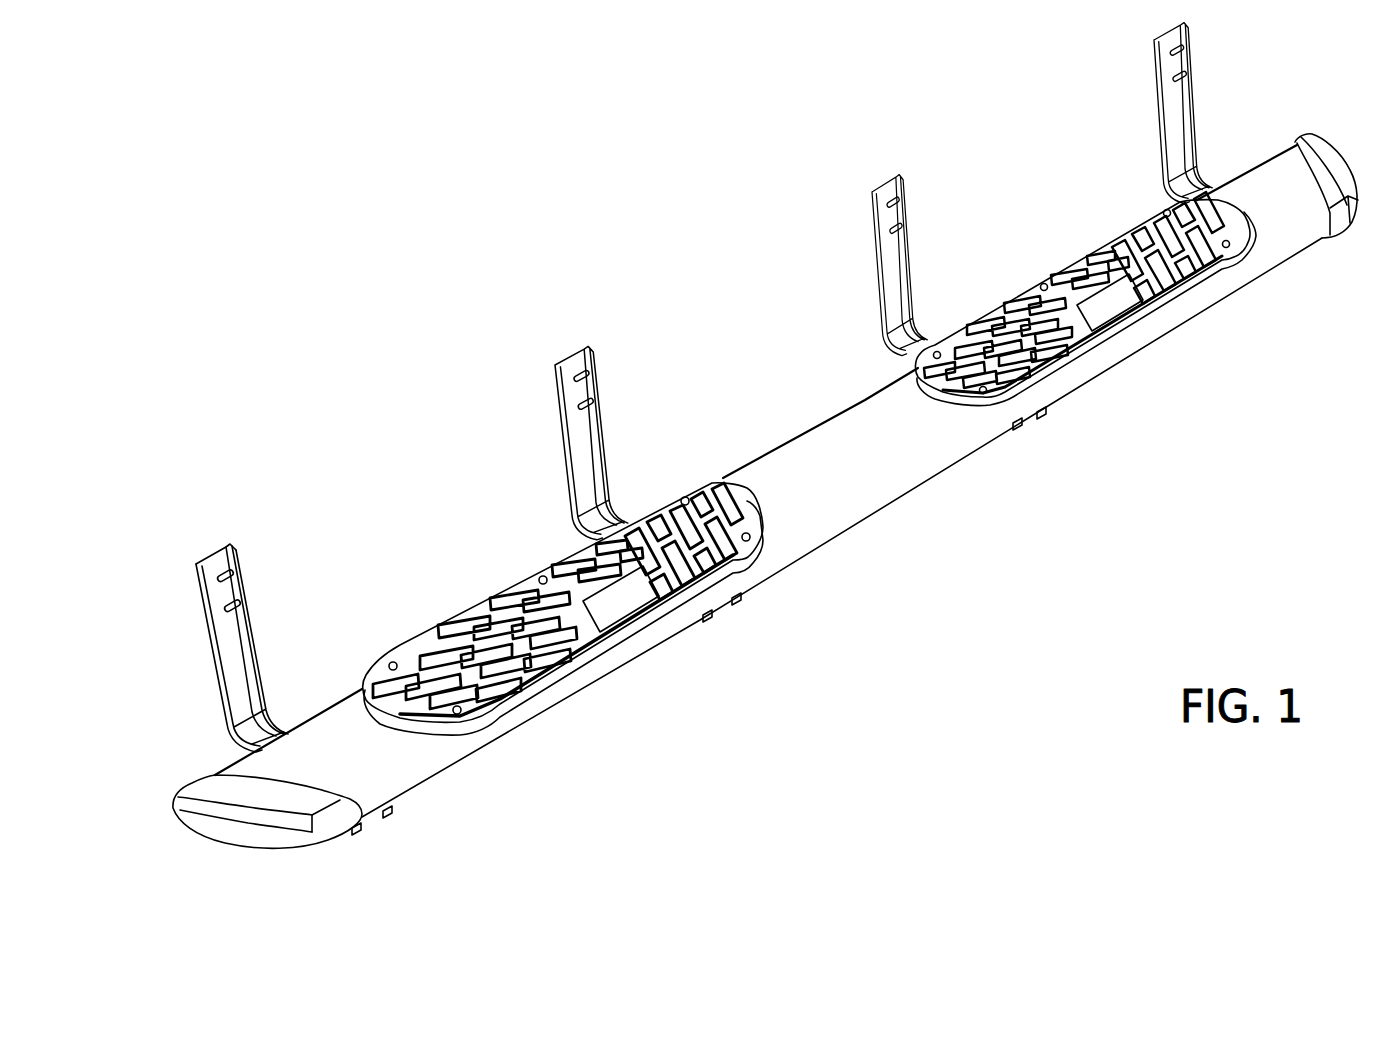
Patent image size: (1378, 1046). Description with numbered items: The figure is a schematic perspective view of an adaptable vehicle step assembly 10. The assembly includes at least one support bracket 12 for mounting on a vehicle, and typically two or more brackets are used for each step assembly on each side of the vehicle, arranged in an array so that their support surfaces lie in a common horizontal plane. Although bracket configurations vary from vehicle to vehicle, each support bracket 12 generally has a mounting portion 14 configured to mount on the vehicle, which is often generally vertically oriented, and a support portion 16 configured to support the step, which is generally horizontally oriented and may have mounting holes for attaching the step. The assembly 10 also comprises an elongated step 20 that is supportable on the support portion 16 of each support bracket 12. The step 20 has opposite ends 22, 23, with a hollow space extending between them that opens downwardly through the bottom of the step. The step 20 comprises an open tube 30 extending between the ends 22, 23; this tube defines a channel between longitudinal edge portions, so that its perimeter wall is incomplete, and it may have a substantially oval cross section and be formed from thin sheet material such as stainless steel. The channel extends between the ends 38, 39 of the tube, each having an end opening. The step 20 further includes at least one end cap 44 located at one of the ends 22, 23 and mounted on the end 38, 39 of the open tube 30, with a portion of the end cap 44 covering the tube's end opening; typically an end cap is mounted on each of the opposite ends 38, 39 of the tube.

The vehicle step assembly 10 is at (530, 180).
The support bracket 12 is at (252, 623).
The mounting portion 14 is at (256, 555).
The support portion 16 is at (385, 812).
The elongated step 20 is at (904, 521).
The end 22 is at (181, 753).
The end 23 is at (1350, 266).
The open tube 30 is at (866, 406).
The end of the tube 38 is at (333, 786).
The end of the tube 39 is at (1303, 177).
The end cap 44 is at (338, 820).